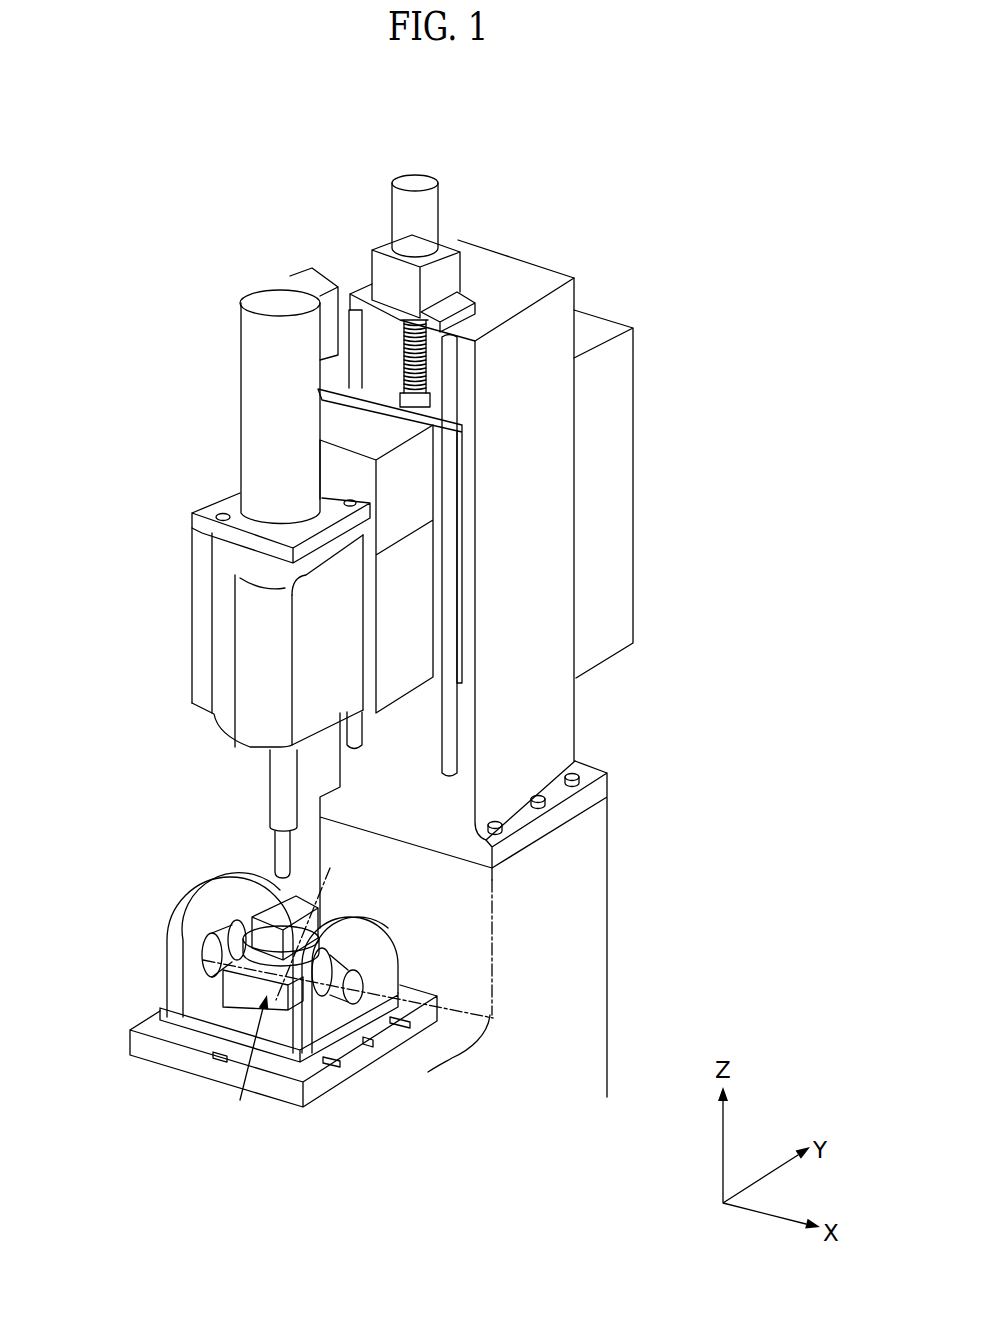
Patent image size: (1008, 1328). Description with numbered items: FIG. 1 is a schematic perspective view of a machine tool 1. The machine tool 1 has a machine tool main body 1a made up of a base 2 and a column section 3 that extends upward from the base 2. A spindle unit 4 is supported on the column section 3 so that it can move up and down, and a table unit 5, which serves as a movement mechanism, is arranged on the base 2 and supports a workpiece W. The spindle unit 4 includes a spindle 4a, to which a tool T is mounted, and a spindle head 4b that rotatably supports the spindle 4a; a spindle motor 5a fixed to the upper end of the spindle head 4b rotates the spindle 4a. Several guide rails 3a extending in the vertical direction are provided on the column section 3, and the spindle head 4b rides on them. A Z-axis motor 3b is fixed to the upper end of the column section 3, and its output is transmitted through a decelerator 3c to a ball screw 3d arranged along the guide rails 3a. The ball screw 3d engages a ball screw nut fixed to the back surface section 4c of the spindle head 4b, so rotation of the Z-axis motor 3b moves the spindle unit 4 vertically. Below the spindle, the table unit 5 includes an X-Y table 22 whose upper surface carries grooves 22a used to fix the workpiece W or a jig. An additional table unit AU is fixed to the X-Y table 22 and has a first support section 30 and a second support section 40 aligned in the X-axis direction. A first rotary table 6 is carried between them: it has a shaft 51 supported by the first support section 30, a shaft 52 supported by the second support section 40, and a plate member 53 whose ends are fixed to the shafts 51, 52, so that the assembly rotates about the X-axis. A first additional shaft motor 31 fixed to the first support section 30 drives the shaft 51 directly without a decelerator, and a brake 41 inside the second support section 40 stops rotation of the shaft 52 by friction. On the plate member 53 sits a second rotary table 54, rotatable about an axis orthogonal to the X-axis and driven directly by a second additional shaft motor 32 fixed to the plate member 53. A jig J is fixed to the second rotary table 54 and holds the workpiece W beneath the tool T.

The machine tool 1 is at (592, 165).
The machine tool main body 1a is at (577, 718).
The base 2 is at (483, 1103).
The column section 3 is at (545, 465).
The guide rails 3a is at (349, 373).
The Z-axis motor 3b is at (392, 193).
The decelerator 3c is at (450, 263).
The ball screw 3d is at (395, 330).
The spindle unit 4 is at (178, 540).
The spindle 4a is at (270, 771).
The spindle head 4b is at (413, 617).
The back surface section 4c is at (440, 403).
The table unit 5 is at (157, 1098).
The spindle motor 5a is at (248, 295).
The first rotary table 6 is at (246, 1057).
The X-Y table 22 is at (293, 1093).
The grooves 22a is at (460, 1052).
The first support section 30 is at (363, 907).
The first additional shaft motor 31 is at (362, 995).
The second additional shaft motor 32 is at (135, 1052).
The second support section 40 is at (208, 893).
The brake 41 is at (203, 923).
The shaft 51 is at (353, 987).
The shaft 52 is at (237, 945).
The plate member 53 is at (230, 957).
The second rotary table 54 is at (237, 1000).
The additional table unit AU is at (178, 913).
The jig J is at (308, 926).
The tool T is at (273, 850).
The workpiece W is at (267, 900).